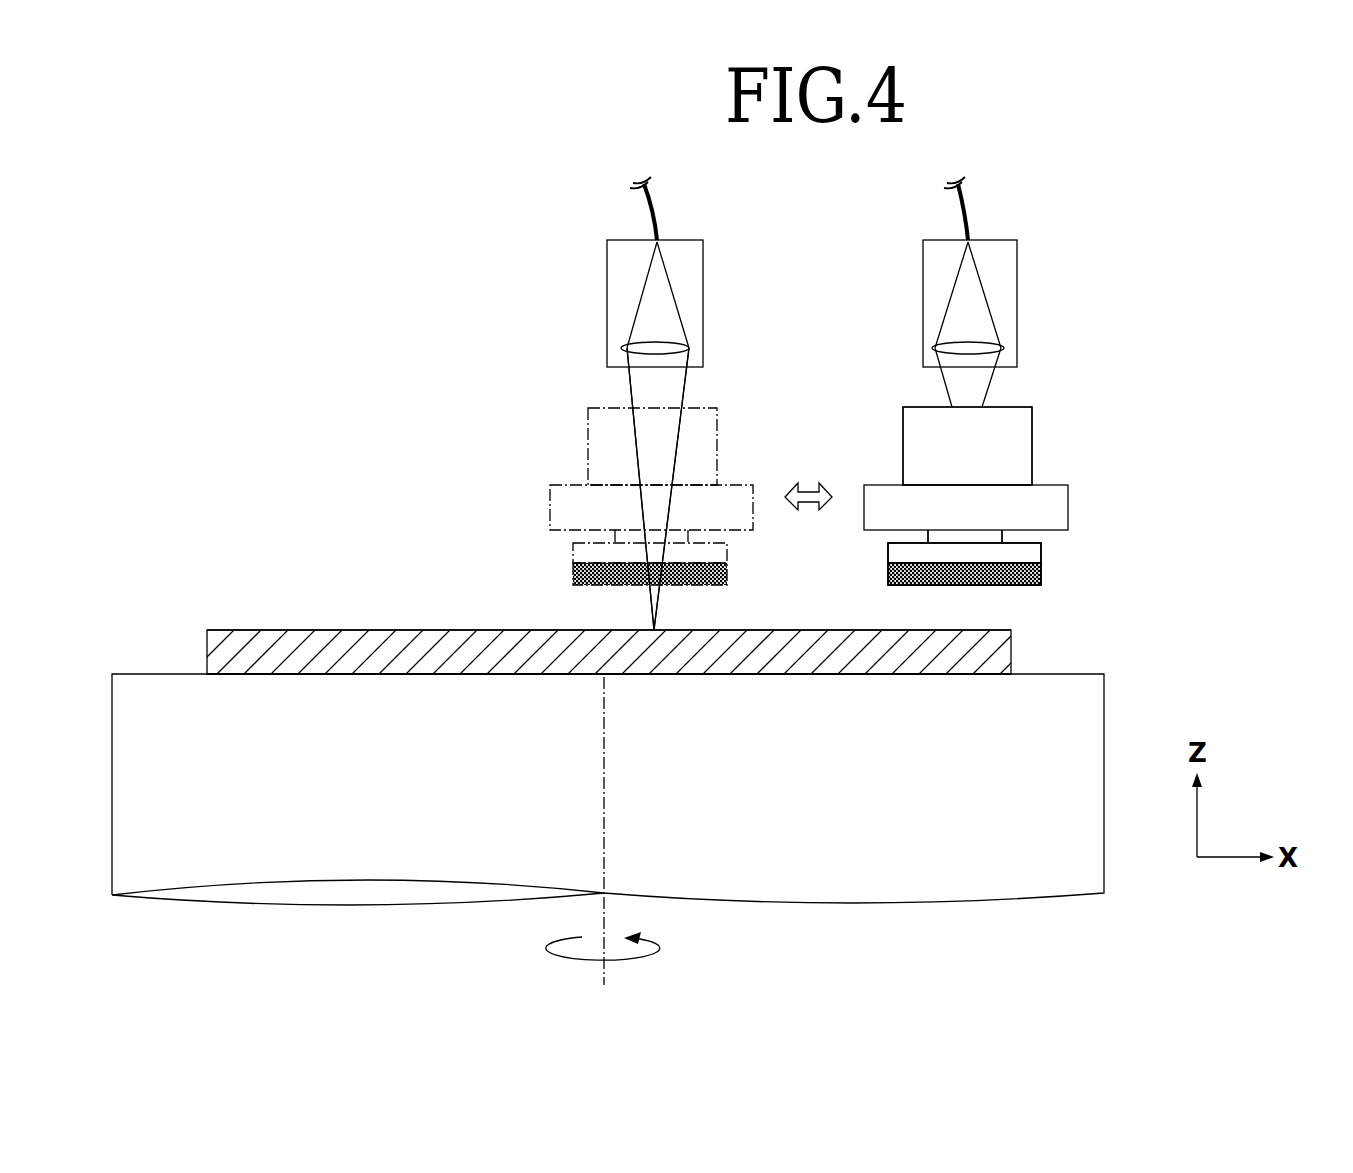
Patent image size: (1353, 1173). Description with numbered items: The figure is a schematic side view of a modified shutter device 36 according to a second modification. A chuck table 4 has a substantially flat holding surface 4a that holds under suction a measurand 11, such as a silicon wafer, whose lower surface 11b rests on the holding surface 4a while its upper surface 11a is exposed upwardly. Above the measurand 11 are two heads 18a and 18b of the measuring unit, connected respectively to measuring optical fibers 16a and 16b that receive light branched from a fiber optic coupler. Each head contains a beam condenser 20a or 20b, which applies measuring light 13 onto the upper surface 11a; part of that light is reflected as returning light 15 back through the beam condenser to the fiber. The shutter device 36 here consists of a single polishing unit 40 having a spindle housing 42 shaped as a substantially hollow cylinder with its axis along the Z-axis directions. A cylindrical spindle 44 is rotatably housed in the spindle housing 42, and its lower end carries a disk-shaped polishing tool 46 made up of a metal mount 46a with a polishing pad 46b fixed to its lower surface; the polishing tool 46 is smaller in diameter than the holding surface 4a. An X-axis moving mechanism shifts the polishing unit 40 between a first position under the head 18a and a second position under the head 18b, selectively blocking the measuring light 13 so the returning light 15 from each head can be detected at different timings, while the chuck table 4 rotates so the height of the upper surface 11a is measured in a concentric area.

The chuck table 4 is at (1114, 895).
The holding surface 4a is at (418, 674).
The measurand 11 is at (206, 655).
The upper surface 11a is at (268, 630).
The lower surface 11b is at (267, 677).
The measuring light 13 is at (946, 378).
The returning light 15 is at (662, 612).
The measuring optical fiber 16a is at (662, 212).
The measuring optical fiber 16b is at (974, 212).
The head 18a is at (598, 259).
The head 18b is at (1032, 259).
The beam condenser 20a is at (624, 348).
The beam condenser 20b is at (934, 348).
The shutter device 36 is at (1232, 385).
The polishing unit 40 is at (578, 436).
The spindle housing 42 is at (1032, 460).
The spindle 44 is at (1003, 541).
The polishing tool 46 is at (1180, 555).
The mount 46a is at (1035, 552).
The polishing pad 46b is at (1040, 575).